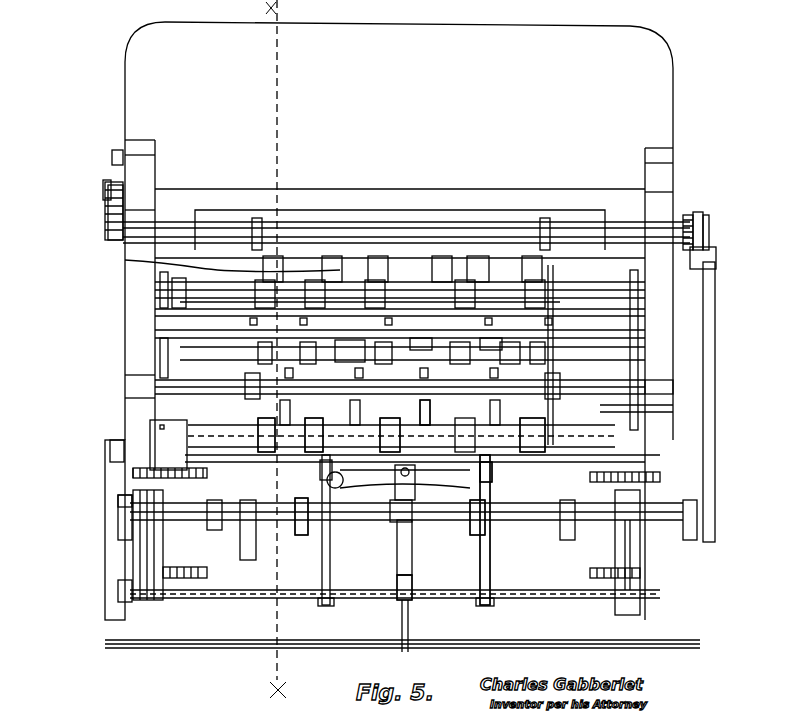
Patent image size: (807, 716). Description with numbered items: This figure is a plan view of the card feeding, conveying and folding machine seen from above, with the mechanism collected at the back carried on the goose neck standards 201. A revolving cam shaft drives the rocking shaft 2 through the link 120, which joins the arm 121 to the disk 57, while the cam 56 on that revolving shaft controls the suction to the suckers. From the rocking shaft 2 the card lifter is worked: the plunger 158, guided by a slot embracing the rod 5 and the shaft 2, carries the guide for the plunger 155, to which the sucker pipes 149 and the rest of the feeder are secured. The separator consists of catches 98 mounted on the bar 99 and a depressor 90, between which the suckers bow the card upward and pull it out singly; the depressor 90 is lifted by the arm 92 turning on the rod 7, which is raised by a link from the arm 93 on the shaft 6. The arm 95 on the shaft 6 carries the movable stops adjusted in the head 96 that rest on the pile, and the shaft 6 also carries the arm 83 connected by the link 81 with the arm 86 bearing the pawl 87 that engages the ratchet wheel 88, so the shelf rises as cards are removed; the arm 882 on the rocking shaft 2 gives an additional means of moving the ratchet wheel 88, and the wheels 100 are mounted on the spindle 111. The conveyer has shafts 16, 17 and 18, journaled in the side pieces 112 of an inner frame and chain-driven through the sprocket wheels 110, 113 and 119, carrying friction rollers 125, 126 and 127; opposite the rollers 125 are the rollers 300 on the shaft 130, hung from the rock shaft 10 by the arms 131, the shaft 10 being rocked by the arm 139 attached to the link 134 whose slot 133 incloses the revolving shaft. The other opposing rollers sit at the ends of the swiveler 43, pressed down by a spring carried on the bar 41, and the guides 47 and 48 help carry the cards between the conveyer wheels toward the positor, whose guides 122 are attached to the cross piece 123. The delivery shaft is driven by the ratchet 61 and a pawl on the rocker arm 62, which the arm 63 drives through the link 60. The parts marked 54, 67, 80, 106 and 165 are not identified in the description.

The rocking shaft 2 is at (640, 525).
The rod 5 is at (640, 520).
The shaft 6 is at (660, 612).
The rod 7 is at (238, 648).
The rock shaft 10 is at (673, 408).
The shaft 16 is at (210, 432).
The shaft 17 is at (200, 372).
The shaft 18 is at (195, 310).
The bar 41 is at (660, 337).
The swiveler 43 is at (258, 346).
The guide 47 is at (310, 418).
The guide 48 is at (349, 348).
The gear 54 is at (688, 215).
The cam 56 is at (700, 212).
The disk 57 is at (708, 225).
The link 60 is at (108, 202).
The ratchet 61 is at (112, 152).
The rocker arm 62 is at (105, 192).
The arm 63 is at (105, 213).
The shaft 67 is at (640, 235).
The block 80 is at (118, 518).
The link 81 is at (112, 567).
The arm 83 is at (118, 592).
The arm 86 is at (105, 476).
The pawl 87 is at (110, 448).
The ratchet wheel 88 is at (160, 427).
The depressor 90 is at (340, 488).
The arm 92 is at (325, 606).
The arm 93 is at (398, 605).
The arm 95 is at (485, 606).
The head 96 is at (492, 472).
The catches 98 is at (320, 465).
The bar 99 is at (560, 462).
The wheels 100 is at (207, 572).
The collar 106 is at (300, 535).
The sprocket wheel 110 is at (125, 398).
The spindle 111 is at (180, 480).
The side pieces 112 is at (125, 375).
The sprocket wheel 113 is at (160, 348).
The sprocket wheel 119 is at (160, 284).
The link 120 is at (718, 343).
The arm 121 is at (697, 505).
The guides 122 is at (165, 258).
The cross piece 123 is at (125, 262).
The friction rollers 125 is at (520, 425).
The friction rollers 126 is at (456, 343).
The friction rollers 127 is at (180, 300).
The roller shaft 130 is at (430, 425).
The arms 131 is at (555, 415).
The slot 133 is at (263, 426).
The link 134 is at (680, 312).
The arm 139 is at (660, 378).
The pipes 149 is at (415, 492).
The plunger 155 is at (412, 545).
The plunger 158 is at (390, 525).
The collar 165 is at (504, 531).
The goose neck standards 201 is at (640, 570).
The rollers 300 is at (390, 420).
The arm 882 is at (118, 505).